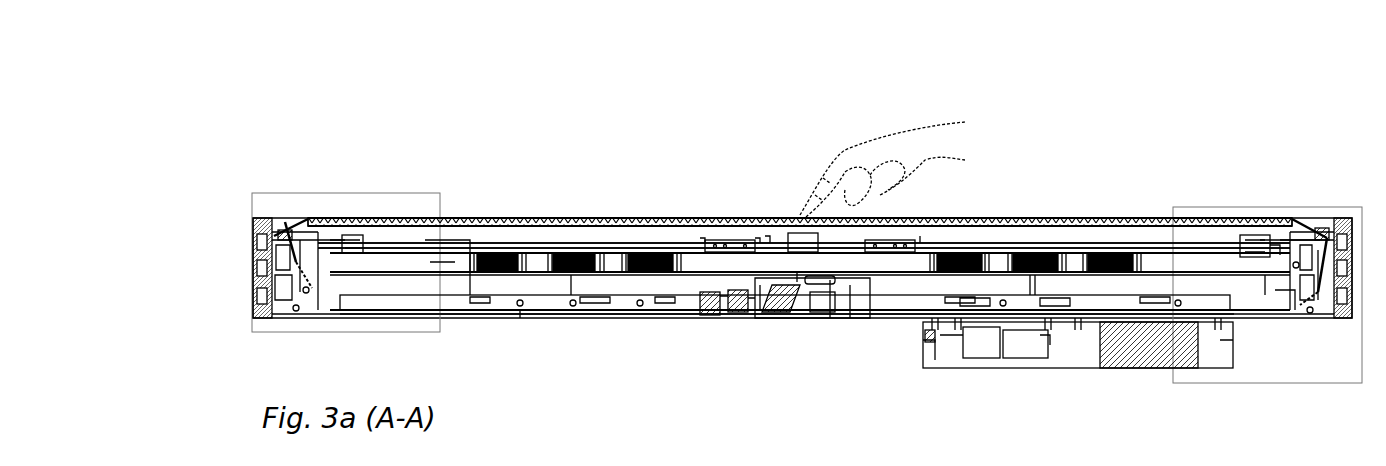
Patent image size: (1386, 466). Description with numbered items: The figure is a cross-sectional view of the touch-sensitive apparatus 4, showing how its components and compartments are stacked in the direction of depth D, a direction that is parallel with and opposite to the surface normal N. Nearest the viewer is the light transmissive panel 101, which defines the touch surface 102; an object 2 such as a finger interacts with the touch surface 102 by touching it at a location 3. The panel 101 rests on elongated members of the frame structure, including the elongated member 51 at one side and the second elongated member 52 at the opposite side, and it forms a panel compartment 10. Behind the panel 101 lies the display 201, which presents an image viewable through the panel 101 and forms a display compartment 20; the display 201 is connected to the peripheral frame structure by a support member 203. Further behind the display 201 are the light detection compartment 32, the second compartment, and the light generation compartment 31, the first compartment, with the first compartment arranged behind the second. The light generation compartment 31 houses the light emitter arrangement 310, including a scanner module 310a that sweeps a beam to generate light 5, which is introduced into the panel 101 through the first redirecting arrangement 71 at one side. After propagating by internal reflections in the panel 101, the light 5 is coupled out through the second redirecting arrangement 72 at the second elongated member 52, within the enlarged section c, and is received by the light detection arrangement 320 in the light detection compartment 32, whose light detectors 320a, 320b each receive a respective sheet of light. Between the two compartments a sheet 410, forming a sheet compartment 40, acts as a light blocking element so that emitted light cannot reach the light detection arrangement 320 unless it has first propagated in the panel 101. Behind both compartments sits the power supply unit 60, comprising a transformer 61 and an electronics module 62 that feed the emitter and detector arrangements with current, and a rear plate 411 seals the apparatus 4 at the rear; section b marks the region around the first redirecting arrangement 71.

The object 2 is at (850, 153).
The location 3 is at (794, 208).
The touch-sensitive apparatus 4 is at (1280, 72).
The light 5 is at (670, 218).
The panel compartment 10 is at (241, 220).
The display compartment 20 is at (241, 233).
The light generation compartment 31 is at (241, 282).
The light detection compartment 32 is at (241, 261).
The sheet compartment 40 is at (241, 271).
The elongated member 51 is at (1348, 218).
The second elongated member 52 is at (262, 308).
The power supply unit 60 is at (1018, 386).
The transformer 61 is at (1132, 362).
The electronics module 62 is at (987, 347).
The first redirecting arrangement 71 is at (1325, 332).
The second redirecting arrangement 72 is at (277, 206).
The light transmissive panel 101 is at (393, 218).
The touch surface 102 is at (492, 207).
The display 201 is at (507, 235).
The support member 203 is at (1235, 218).
The light emitter arrangement 310 is at (718, 364).
The scanner module 310a is at (785, 305).
The light detection arrangement 320 is at (1110, 106).
The light detector 320a is at (815, 298).
The light detector 320b is at (517, 252).
The sheet 410 is at (428, 268).
The rear plate 411 is at (536, 318).
The surface normal N is at (699, 218).
The direction of depth D is at (716, 158).
The section b is at (1288, 210).
The section c is at (313, 193).